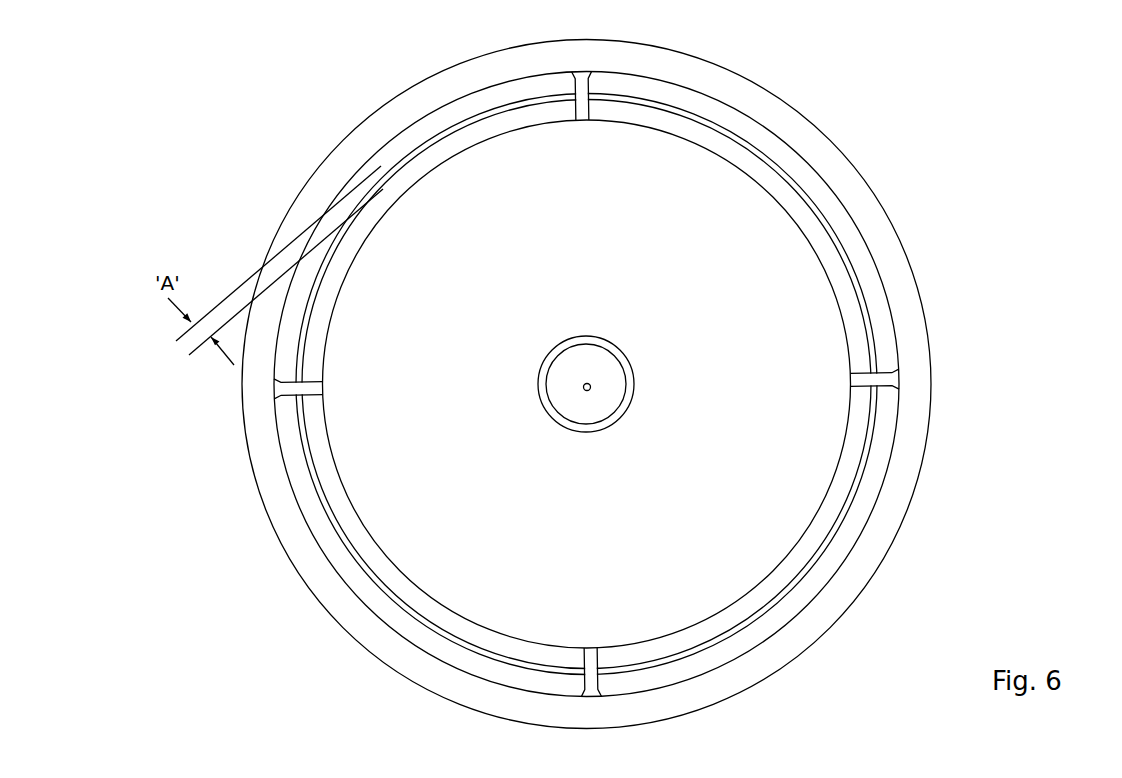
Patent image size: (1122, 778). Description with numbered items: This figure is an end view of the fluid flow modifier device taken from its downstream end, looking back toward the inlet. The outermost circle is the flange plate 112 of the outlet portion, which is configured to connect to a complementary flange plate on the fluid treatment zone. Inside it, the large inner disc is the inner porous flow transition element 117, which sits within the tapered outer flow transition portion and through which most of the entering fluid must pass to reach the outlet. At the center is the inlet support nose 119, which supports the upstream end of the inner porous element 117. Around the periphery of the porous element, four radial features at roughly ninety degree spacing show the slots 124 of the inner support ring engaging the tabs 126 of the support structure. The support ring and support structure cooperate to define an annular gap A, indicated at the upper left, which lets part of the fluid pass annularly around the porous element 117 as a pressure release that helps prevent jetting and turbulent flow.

The flange plate 112 is at (812, 140).
The inner porous flow transition element 117 is at (705, 530).
The inlet support nose 119 is at (567, 398).
The slots 124 is at (578, 110).
The tabs 126 is at (597, 102).